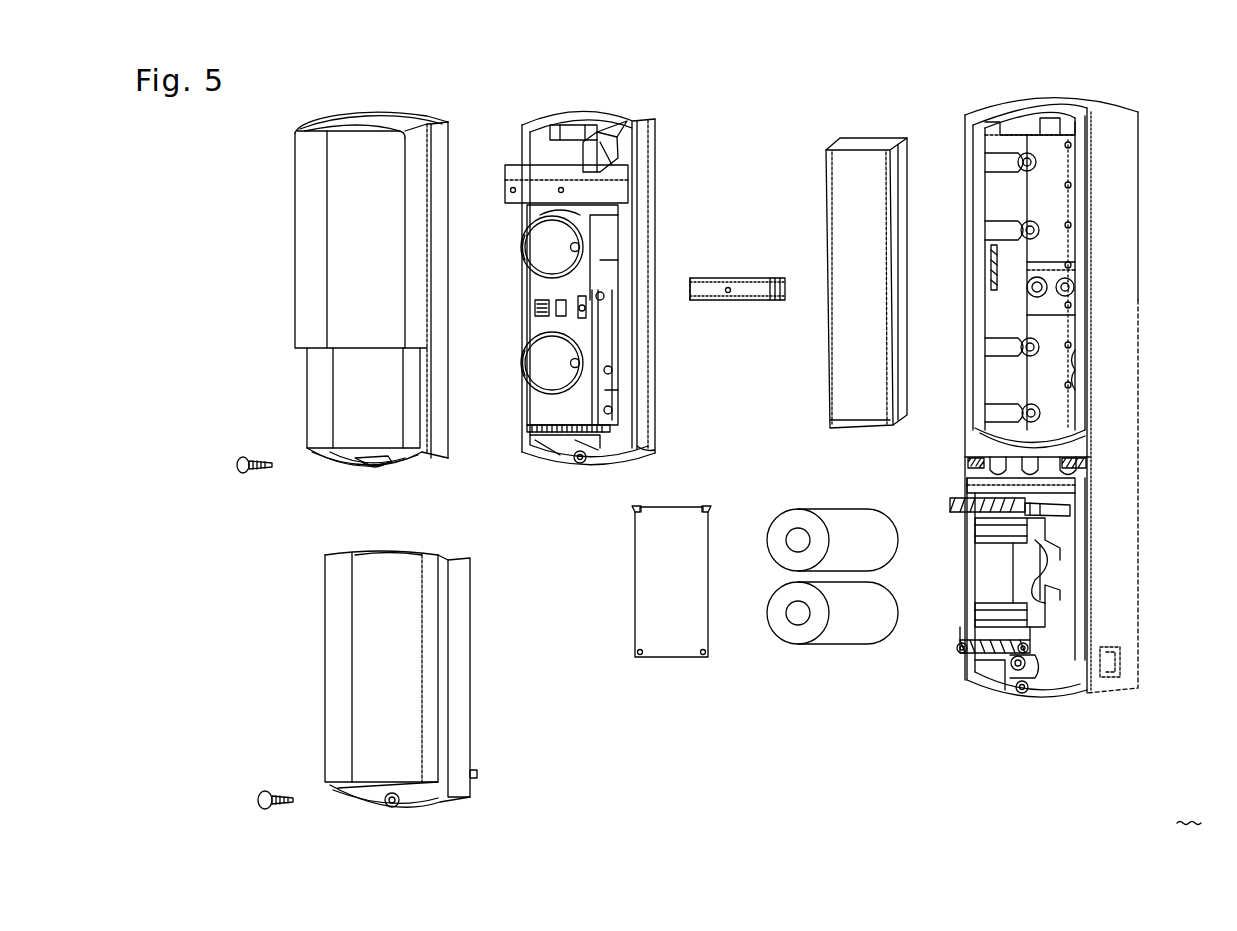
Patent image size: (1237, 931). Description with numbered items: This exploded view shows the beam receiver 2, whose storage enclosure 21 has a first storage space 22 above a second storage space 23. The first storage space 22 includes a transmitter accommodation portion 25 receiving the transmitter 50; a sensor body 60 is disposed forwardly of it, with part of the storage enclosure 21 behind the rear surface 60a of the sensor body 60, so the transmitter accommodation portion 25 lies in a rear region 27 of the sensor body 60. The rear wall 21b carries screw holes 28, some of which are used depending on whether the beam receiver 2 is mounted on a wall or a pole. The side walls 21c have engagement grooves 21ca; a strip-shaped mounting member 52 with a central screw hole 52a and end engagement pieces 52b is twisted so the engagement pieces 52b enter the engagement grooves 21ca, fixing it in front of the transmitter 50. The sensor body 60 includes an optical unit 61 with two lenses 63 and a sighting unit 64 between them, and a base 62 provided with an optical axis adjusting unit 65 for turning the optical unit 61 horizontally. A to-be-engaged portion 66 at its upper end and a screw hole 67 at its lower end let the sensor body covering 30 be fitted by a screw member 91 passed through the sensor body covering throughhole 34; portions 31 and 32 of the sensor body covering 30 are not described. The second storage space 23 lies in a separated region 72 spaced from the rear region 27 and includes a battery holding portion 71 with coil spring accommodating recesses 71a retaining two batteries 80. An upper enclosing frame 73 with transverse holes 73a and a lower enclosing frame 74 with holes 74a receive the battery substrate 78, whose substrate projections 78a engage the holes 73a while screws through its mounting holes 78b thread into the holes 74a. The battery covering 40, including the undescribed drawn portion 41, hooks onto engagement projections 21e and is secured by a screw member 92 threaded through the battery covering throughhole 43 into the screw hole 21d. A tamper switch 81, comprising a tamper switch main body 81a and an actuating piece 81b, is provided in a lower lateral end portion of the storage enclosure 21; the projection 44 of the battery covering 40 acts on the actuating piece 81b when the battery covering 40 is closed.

The beam receiver 2 is at (1189, 811).
The storage enclosure 21 is at (1054, 423).
The rear wall 21b is at (1112, 112).
The side walls 21c is at (1078, 362).
The engagement grooves 21ca is at (992, 280).
The screw hole 21d is at (1006, 698).
The engagement projections 21e is at (1088, 452).
The first storage space 22 is at (1036, 130).
The second storage space 23 is at (980, 584).
The transmitter accommodation portion 25 is at (1050, 133).
The rear region 27 is at (1045, 195).
The screw holes 28 is at (1018, 160).
The sensor body covering 30 is at (344, 293).
The cover top 31 is at (362, 120).
The cover bottom 32 is at (400, 466).
The sensor body covering throughhole 34 is at (378, 470).
The battery covering 40 is at (394, 678).
The cover bottom plate 41 is at (422, 792).
The battery covering throughhole 43 is at (386, 806).
The projection 44 is at (392, 562).
The transmitter 50 is at (866, 136).
The mounting member 52 is at (736, 288).
The screw hole 52a is at (726, 293).
The engagement pieces 52b is at (700, 276).
The sensor body 60 is at (599, 284).
The rear surface 60a is at (656, 154).
The optical unit 61 is at (541, 315).
The base 62 is at (650, 440).
The lenses 63 is at (540, 252).
The sighting unit 64 is at (532, 310).
The optical axis adjusting unit 65 is at (527, 430).
The to-be-engaged portion 66 is at (590, 124).
The screw hole 67 is at (579, 464).
The battery holding portion 71 is at (1093, 569).
The coil spring accommodating recesses 71a is at (1032, 530).
The separated region 72 is at (1038, 577).
The upper enclosing frame 73 is at (1055, 477).
The transverse holes 73a is at (965, 500).
The lower enclosing frame 74 is at (1047, 689).
The holes 74a is at (958, 652).
The battery substrate 78 is at (673, 590).
The substrate projections 78a is at (708, 509).
The mounting holes 78b is at (637, 655).
The batteries 80 is at (840, 508).
The tamper switch 81 is at (1115, 717).
The tamper switch main body 81a is at (1128, 700).
The actuating piece 81b is at (1091, 701).
The screw member 91 is at (245, 455).
The screw member 92 is at (266, 790).